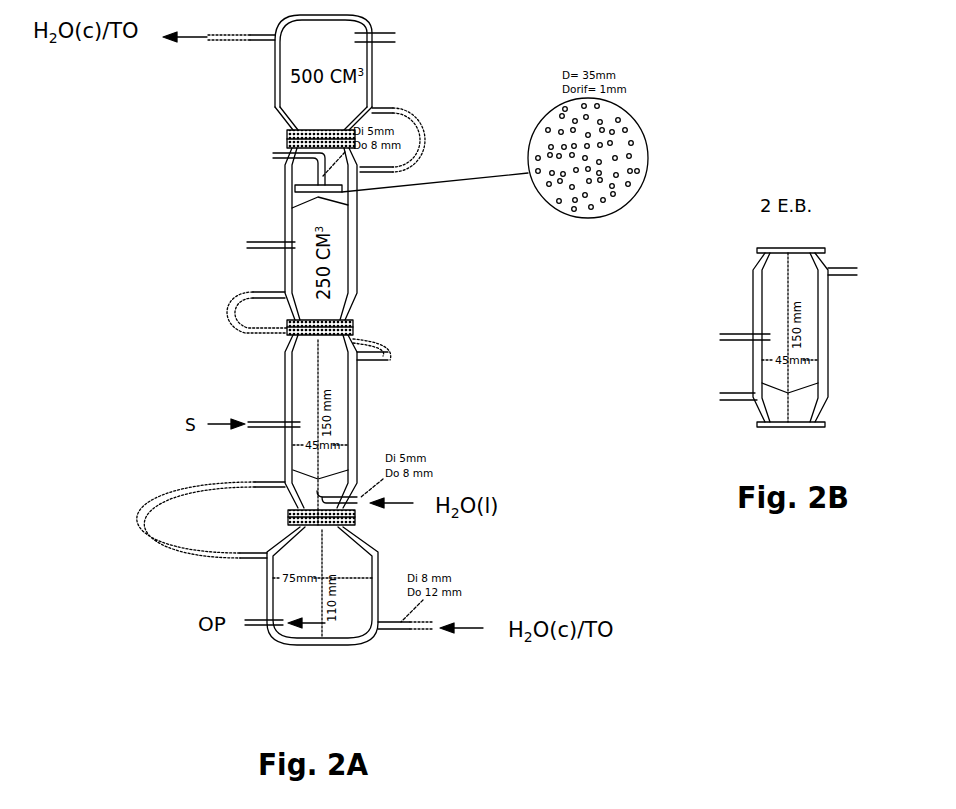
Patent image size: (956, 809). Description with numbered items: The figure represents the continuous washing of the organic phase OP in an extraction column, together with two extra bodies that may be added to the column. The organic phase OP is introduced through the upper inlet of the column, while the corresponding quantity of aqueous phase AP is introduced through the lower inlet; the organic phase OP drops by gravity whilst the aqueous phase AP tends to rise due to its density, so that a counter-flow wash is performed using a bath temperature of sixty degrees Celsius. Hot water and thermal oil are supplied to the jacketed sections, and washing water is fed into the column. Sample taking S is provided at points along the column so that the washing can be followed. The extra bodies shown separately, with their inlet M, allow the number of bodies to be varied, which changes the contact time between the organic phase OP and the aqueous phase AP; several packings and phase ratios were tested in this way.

In FIG. 2A, the aqueous phase AP is at (383, 37).
In FIG. 2A, the organic phase OP is at (263, 153).
In FIG. 2A, the sample taking S is at (243, 245).
In FIG. 2B, the mixture inlet M is at (717, 337).